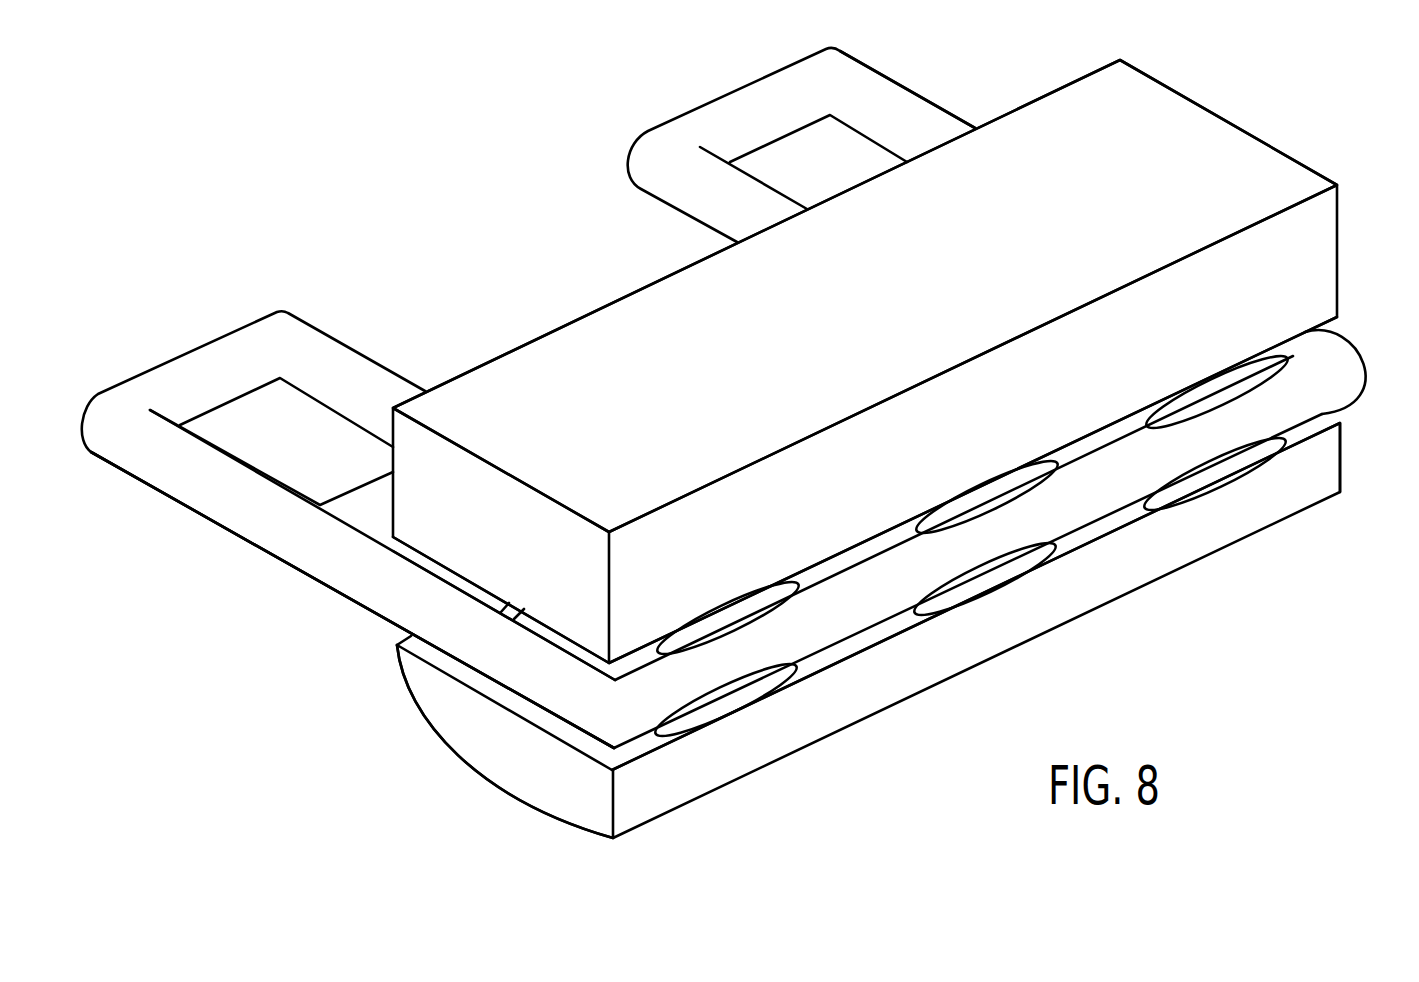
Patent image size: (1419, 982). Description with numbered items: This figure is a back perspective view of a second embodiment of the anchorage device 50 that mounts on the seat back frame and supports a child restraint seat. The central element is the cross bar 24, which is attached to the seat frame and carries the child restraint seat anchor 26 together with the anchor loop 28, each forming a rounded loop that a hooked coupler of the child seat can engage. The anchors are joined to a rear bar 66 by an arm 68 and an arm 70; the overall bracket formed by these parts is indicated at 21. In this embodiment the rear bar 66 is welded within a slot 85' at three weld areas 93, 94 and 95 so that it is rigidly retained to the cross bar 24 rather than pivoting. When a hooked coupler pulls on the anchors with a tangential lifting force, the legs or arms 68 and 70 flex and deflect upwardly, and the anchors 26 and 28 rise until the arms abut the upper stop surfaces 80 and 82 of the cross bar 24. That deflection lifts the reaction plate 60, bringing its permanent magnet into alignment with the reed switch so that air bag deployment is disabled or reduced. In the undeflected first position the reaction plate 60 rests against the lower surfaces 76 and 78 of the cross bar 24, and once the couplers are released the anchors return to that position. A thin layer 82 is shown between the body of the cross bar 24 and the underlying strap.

The mounting bracket 21 is at (269, 577).
The cross bar 24 is at (618, 310).
The child restraint seat anchor 26 is at (752, 98).
The anchor loop 28 is at (232, 347).
The assembly 50 is at (546, 357).
The reaction plate 60 is at (348, 505).
The rear bar 66 is at (1073, 510).
The arm 68 is at (928, 115).
The arm 70 is at (358, 588).
The lower surface 76 is at (1330, 417).
The lower surface 78 is at (547, 722).
The upper stop surface 80 is at (1313, 332).
The upper stop surface 82 is at (537, 623).
The slot 85' is at (973, 490).
The weld area 93 is at (727, 613).
The weld area 94 is at (990, 488).
The weld area 95 is at (1210, 387).